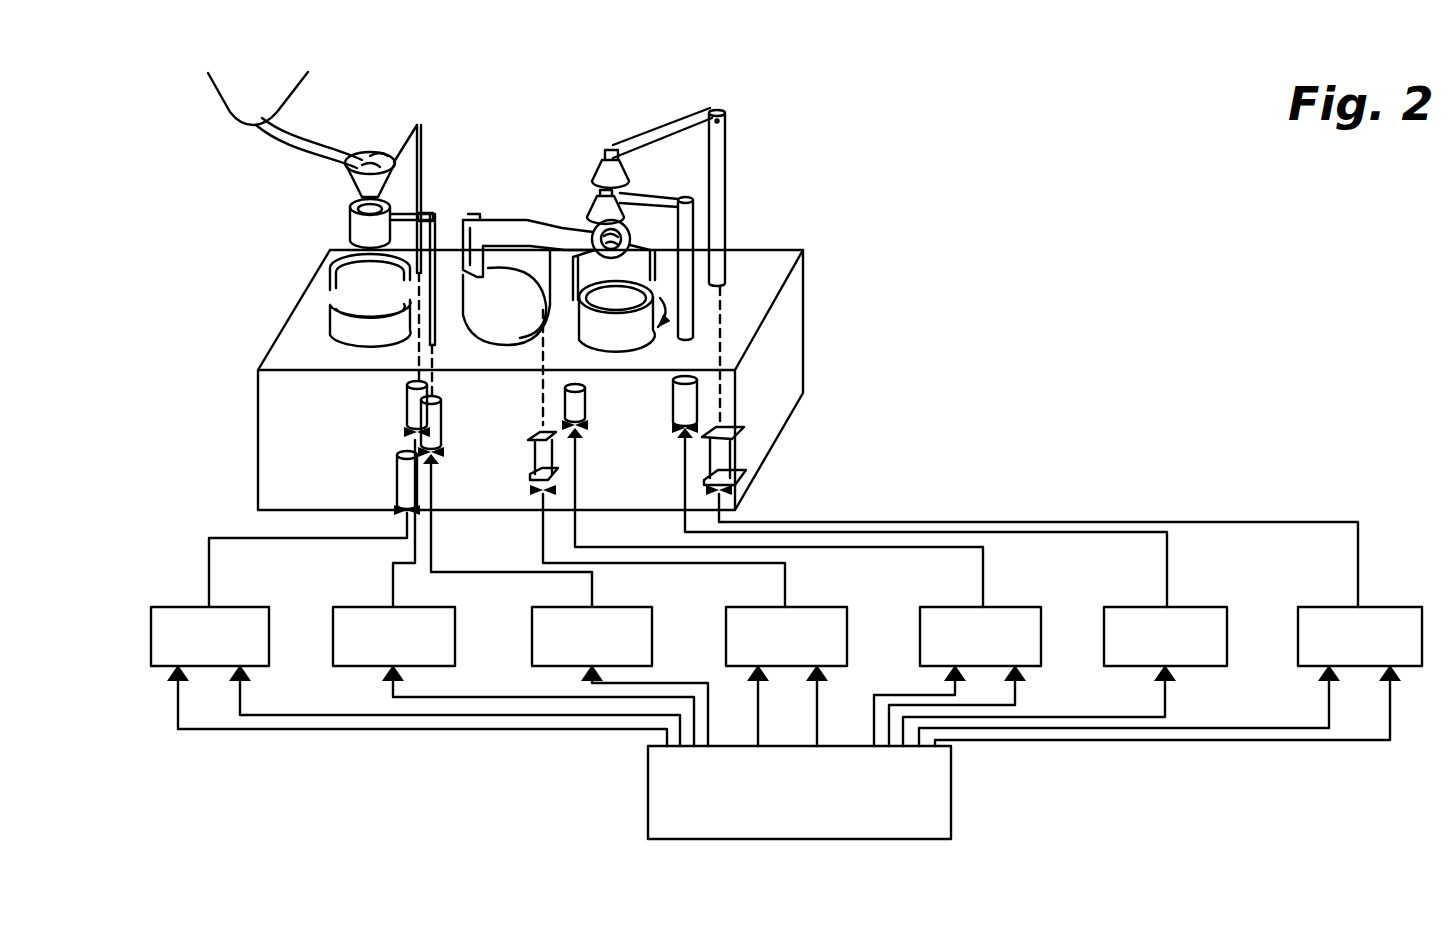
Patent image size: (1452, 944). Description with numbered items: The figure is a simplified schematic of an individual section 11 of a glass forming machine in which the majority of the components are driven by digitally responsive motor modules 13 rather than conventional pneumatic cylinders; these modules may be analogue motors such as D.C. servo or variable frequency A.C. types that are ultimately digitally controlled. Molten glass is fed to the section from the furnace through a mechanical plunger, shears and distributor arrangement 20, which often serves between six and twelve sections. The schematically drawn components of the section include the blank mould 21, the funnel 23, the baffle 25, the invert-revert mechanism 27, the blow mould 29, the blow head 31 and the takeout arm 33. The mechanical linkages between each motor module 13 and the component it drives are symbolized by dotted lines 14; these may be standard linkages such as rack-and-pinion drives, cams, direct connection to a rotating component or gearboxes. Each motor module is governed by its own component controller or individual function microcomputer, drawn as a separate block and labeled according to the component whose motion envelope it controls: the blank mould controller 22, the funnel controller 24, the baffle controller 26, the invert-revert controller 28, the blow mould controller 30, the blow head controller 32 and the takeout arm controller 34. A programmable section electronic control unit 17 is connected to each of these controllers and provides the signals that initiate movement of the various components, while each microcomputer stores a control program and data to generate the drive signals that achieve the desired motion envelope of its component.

The individual section 11 is at (808, 357).
The digitally responsive motor modules 13 is at (402, 426).
The dotted lines 14 is at (404, 352).
The section electronic control unit 17 is at (955, 800).
The mechanical plunger, shears and distributor arrangement 20 is at (229, 113).
The blank mould 21 is at (326, 328).
The blank mould individual function microcomputer 22 is at (196, 606).
The funnel 23 is at (346, 184).
The funnel individual function microcomputer 24 is at (364, 606).
The baffle 25 is at (346, 233).
The baffle individual function microcomputer 26 is at (532, 608).
The invert-revert mechanism 27 is at (540, 213).
The invert-revert mechanism individual function microcomputer 28 is at (727, 610).
The blow mould 29 is at (619, 298).
The blow mould individual function microcomputer 30 is at (921, 610).
The blow head 31 is at (703, 302).
The blow head individual function microcomputer 32 is at (1105, 610).
The takeout arm 33 is at (730, 177).
The takeout arm individual function microcomputer 34 is at (1298, 610).